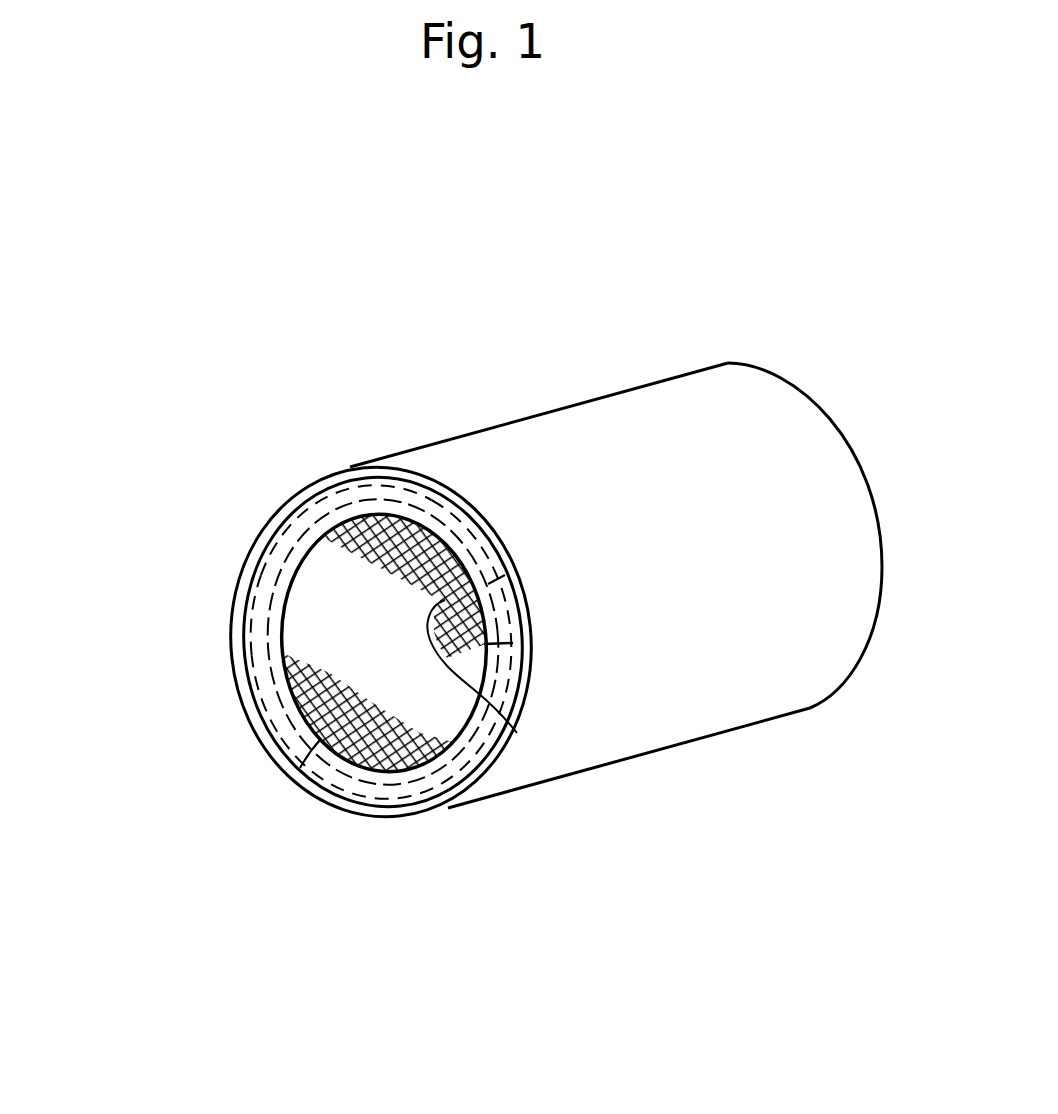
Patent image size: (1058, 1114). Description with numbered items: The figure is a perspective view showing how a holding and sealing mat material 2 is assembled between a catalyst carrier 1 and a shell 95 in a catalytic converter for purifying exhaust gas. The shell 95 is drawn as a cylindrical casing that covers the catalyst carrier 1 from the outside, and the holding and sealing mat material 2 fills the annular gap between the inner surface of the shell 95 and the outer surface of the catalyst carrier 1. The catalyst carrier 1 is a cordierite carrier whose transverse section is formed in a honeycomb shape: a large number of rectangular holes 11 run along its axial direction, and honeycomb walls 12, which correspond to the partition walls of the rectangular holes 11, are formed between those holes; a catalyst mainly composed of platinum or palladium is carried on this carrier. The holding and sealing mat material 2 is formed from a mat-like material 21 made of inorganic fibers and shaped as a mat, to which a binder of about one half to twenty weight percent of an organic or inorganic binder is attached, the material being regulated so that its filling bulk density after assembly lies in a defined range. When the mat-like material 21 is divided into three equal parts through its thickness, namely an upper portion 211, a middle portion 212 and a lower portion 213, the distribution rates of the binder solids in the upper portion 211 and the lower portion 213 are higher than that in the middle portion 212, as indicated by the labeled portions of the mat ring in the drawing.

The catalyst carrier 1 is at (337, 667).
The holding and sealing mat material 2 is at (422, 488).
The rectangular holes 11 is at (488, 584).
The honeycomb walls 12 is at (517, 733).
The mat-like material 21 is at (310, 753).
The shell 95 is at (396, 810).
The upper portion 211 is at (305, 507).
The middle portion 212 is at (266, 556).
The lower portion 213 is at (268, 623).